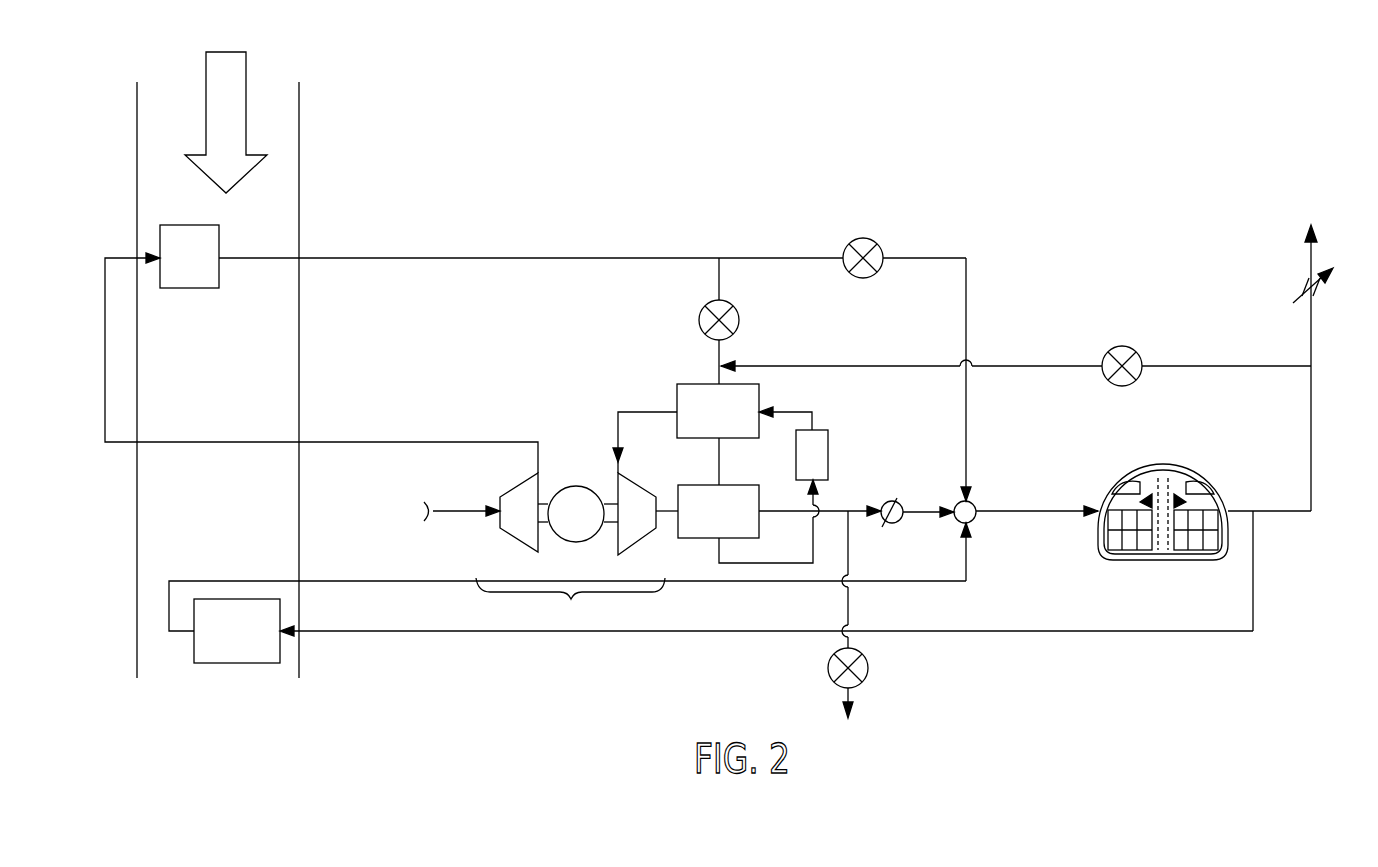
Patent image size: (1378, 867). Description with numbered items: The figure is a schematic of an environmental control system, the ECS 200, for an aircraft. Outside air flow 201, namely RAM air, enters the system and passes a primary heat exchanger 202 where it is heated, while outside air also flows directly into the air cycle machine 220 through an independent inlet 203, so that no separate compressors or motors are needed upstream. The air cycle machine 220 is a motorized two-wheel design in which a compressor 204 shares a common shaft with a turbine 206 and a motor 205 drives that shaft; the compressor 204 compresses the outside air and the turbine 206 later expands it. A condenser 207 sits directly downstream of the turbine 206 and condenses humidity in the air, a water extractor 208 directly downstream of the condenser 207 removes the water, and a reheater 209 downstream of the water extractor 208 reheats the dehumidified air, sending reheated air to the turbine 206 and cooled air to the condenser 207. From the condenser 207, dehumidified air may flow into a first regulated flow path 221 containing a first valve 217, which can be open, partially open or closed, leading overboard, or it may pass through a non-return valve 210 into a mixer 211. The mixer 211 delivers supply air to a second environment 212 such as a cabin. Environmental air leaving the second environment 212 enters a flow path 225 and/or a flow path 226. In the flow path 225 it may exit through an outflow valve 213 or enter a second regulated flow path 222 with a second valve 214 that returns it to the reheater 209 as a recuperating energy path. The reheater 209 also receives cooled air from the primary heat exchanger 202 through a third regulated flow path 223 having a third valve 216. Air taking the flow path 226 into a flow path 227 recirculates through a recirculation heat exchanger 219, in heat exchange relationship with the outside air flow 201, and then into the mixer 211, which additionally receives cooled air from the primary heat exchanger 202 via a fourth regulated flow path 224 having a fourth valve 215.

The ECS 200 is at (990, 212).
The outside air flow 201 is at (246, 70).
The primary heat exchanger 202 is at (219, 250).
The independent inlet 203 is at (426, 512).
The compressor 204 is at (505, 531).
The motor 205 is at (575, 486).
The turbine 206 is at (632, 542).
The condenser 207 is at (692, 540).
The water extractor 208 is at (828, 449).
The reheater 209 is at (677, 397).
The non-return valve 210 is at (893, 501).
The mixer 211 is at (975, 519).
The second environment 212 is at (1164, 465).
The outflow valve 213 is at (1298, 296).
The second valve 214 is at (1122, 346).
The fourth valve 215 is at (865, 278).
The third valve 216 is at (699, 323).
The first valve 217 is at (828, 668).
The recirculation heat exchanger 219 is at (280, 655).
The air cycle machine 220 is at (570, 603).
The first regulated flow path 221 is at (851, 613).
The second regulated flow path 222 is at (1062, 366).
The third regulated flow path 223 is at (719, 284).
The fourth regulated flow path 224 is at (768, 257).
The flow path 225 is at (1313, 403).
The flow path 226 is at (1255, 588).
The flow path 227 is at (1108, 631).